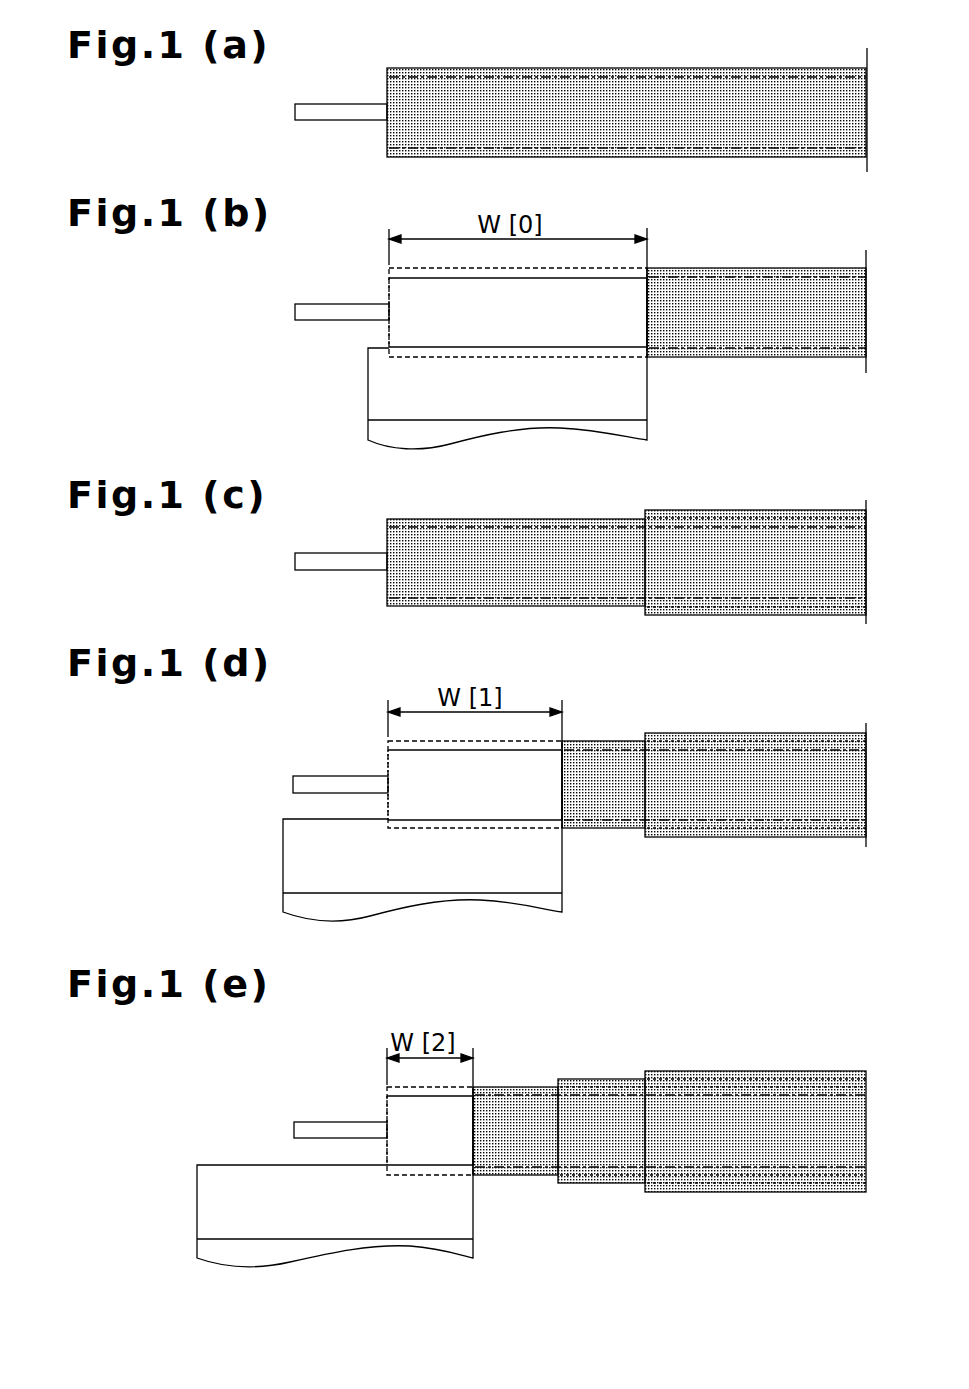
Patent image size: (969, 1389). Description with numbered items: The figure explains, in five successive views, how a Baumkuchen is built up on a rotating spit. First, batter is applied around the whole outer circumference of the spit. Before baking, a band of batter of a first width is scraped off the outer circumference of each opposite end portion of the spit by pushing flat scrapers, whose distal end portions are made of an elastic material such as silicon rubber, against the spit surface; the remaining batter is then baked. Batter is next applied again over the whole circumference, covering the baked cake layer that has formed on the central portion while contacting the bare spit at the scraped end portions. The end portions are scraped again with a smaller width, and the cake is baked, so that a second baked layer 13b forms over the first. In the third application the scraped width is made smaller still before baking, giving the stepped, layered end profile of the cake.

The second coating layer 13b is at (684, 1070).